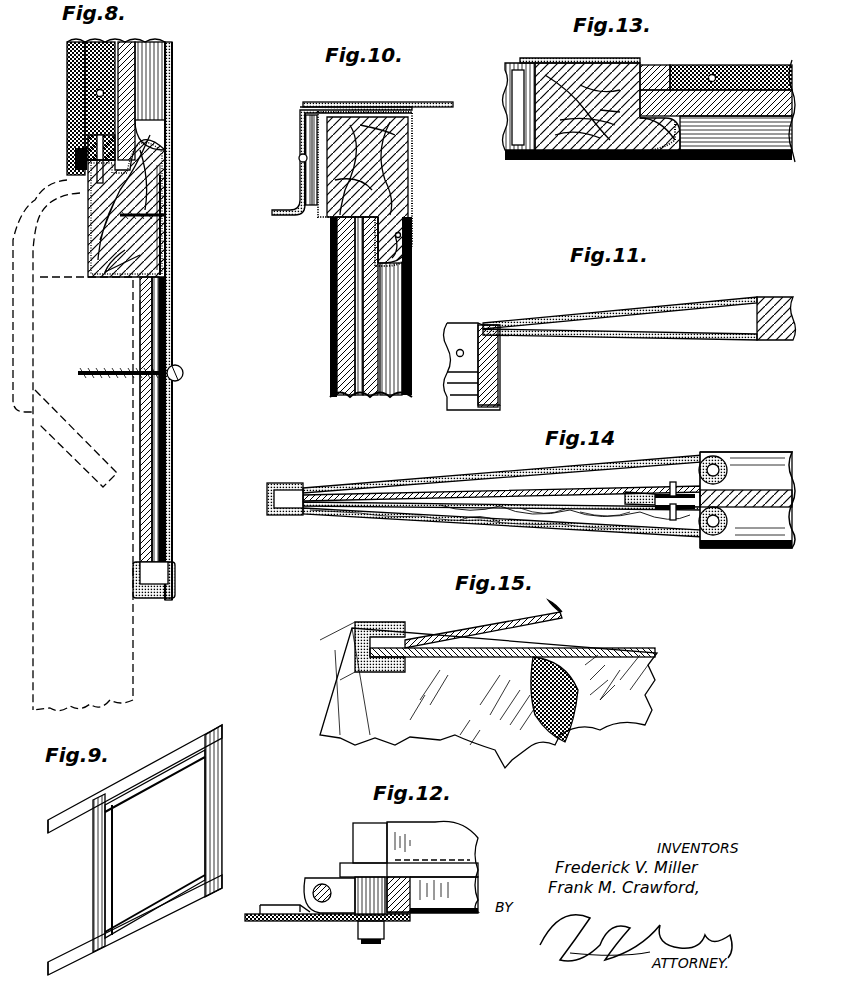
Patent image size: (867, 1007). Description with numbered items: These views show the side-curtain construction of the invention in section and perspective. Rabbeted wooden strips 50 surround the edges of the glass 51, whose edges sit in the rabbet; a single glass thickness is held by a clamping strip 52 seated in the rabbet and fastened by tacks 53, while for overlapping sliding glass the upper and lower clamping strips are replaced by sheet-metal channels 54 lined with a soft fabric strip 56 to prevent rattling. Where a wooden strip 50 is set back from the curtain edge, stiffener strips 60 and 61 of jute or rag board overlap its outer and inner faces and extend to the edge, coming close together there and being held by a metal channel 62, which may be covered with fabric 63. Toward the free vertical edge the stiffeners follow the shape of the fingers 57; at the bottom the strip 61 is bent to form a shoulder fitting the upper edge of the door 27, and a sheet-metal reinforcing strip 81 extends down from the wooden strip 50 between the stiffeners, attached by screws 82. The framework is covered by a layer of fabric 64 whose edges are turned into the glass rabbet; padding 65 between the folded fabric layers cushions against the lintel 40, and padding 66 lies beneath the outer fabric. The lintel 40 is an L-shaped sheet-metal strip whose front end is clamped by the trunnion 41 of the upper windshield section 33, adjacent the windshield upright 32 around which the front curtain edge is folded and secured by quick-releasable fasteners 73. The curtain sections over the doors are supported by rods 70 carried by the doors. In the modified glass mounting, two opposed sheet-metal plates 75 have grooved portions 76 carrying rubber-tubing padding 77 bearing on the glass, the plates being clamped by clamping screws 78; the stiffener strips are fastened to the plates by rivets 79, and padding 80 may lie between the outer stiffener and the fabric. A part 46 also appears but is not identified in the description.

In FIG. 8, the rear door 27 is at (125, 537).
In FIG. 11, the windshield upright 32 is at (500, 370).
In FIG. 12, the windshield upright 32 is at (464, 908).
In FIG. 12, the upper windshield section 33 is at (460, 850).
In FIG. 10, the lintel strip 40 is at (358, 143).
In FIG. 12, the trunnion 41 is at (375, 945).
In FIG. 10, the mounting bar 46 is at (415, 102).
In FIG. 12, the mounting bar 46 is at (320, 924).
In FIG. 8, the rabbeted wooden strip 50 is at (150, 183).
In FIG. 9, the rabbeted wooden strip 50 is at (188, 735).
In FIG. 10, the rabbeted wooden strip 50 is at (395, 193).
In FIG. 13, the rabbeted wooden strip 50 is at (600, 160).
In FIG. 11, the rabbeted wooden strip 50 is at (768, 340).
In FIG. 8, the glass 51 is at (138, 93).
In FIG. 10, the glass 51 is at (395, 306).
In FIG. 13, the glass 51 is at (740, 118).
In FIG. 14, the glass 51 is at (772, 508).
In FIG. 8, the clamping strip 52 is at (80, 144).
In FIG. 13, the clamping strip 52 is at (660, 67).
In FIG. 8, the tacks 53 is at (97, 93).
In FIG. 13, the tacks 53 is at (722, 66).
In FIG. 10, the sheet-metal channel 54 is at (338, 238).
In FIG. 10, the fabric strip 56 is at (345, 256).
In FIG. 8, the fingers 57 is at (183, 368).
In FIG. 9, the fingers 57 is at (70, 825).
In FIG. 13, the fingers 57 is at (520, 128).
In FIG. 8, the outer stiffener strip 60 is at (173, 320).
In FIG. 13, the outer stiffener strip 60 is at (508, 161).
In FIG. 14, the outer stiffener strip 60 is at (490, 505).
In FIG. 15, the outer stiffener strip 60 is at (648, 650).
In FIG. 8, the inner stiffener strip 61 is at (173, 408).
In FIG. 13, the inner stiffener strip 61 is at (512, 73).
In FIG. 14, the inner stiffener strip 61 is at (452, 493).
In FIG. 15, the inner stiffener strip 61 is at (520, 627).
In FIG. 8, the metal channel 62 is at (178, 592).
In FIG. 14, the metal channel 62 is at (300, 518).
In FIG. 15, the metal channel 62 is at (387, 624).
In FIG. 15, the fabric covering 63 is at (355, 650).
In FIG. 8, the covering fabric 64 is at (173, 462).
In FIG. 10, the covering fabric 64 is at (410, 152).
In FIG. 13, the covering fabric 64 is at (513, 60).
In FIG. 11, the covering fabric 64 is at (650, 310).
In FIG. 14, the covering fabric 64 is at (418, 479).
In FIG. 15, the covering fabric 64 is at (455, 720).
In FIG. 10, the padding 65 is at (312, 178).
In FIG. 10, the padding 66 is at (410, 222).
In FIG. 13, the padding 66 is at (515, 162).
In FIG. 15, the padding 66 is at (580, 665).
In FIG. 8, the rods 70 is at (35, 195).
In FIG. 11, the fasteners 73 is at (462, 349).
In FIG. 14, the sheet-metal plates 75 is at (676, 522).
In FIG. 14, the grooved portions 76 is at (720, 458).
In FIG. 14, the padding 77 is at (740, 470).
In FIG. 14, the clamping screws 78 is at (650, 492).
In FIG. 14, the rivets 79 is at (690, 492).
In FIG. 14, the padding 80 is at (600, 537).
In FIG. 8, the sheet-metal reinforcing strip 81 is at (158, 197).
In FIG. 8, the screws 82 is at (166, 217).